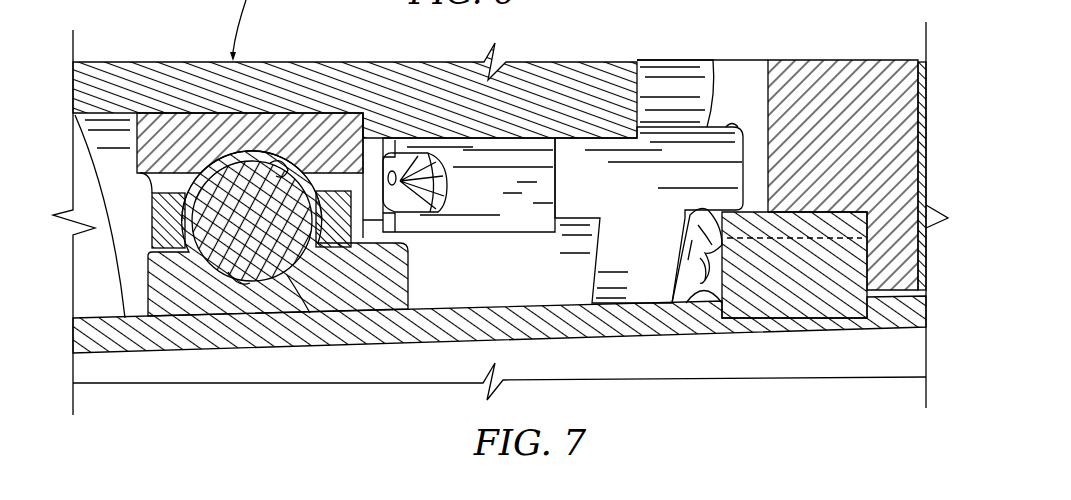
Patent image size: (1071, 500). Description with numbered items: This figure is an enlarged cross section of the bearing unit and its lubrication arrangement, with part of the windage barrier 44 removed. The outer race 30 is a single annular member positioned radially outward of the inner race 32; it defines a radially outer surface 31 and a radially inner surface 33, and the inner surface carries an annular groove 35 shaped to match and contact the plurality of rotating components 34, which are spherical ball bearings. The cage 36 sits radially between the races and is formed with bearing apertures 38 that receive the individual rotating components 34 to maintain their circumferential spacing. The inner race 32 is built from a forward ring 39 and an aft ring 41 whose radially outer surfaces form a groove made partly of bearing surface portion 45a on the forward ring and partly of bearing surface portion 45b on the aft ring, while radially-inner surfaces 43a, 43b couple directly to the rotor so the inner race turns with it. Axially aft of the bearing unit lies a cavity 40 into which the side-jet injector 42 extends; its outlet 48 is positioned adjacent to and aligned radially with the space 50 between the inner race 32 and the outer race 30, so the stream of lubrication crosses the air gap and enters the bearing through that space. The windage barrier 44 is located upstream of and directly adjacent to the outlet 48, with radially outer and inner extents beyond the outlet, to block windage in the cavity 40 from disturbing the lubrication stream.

The outer race 30 is at (229, 101).
The radially outer surface 31 is at (257, 112).
The inner race 32 is at (105, 300).
The radially inner surface 33 is at (326, 180).
The rotating components 34 is at (176, 265).
The annular groove 35 is at (201, 150).
The cage 36 is at (141, 218).
The bearing apertures 38 is at (190, 188).
The forward ring 39 is at (163, 333).
The cavity 40 is at (576, 167).
The aft ring 41 is at (359, 331).
The side-jet injector 42 is at (680, 113).
The radially-inner surface 43a is at (223, 320).
The radially-inner surface 43b is at (402, 313).
The windage barrier 44 is at (523, 147).
The bearing surface portion 45a is at (260, 272).
The bearing surface portion 45b is at (293, 280).
The outlet 48 is at (376, 165).
The space 50 is at (338, 150).